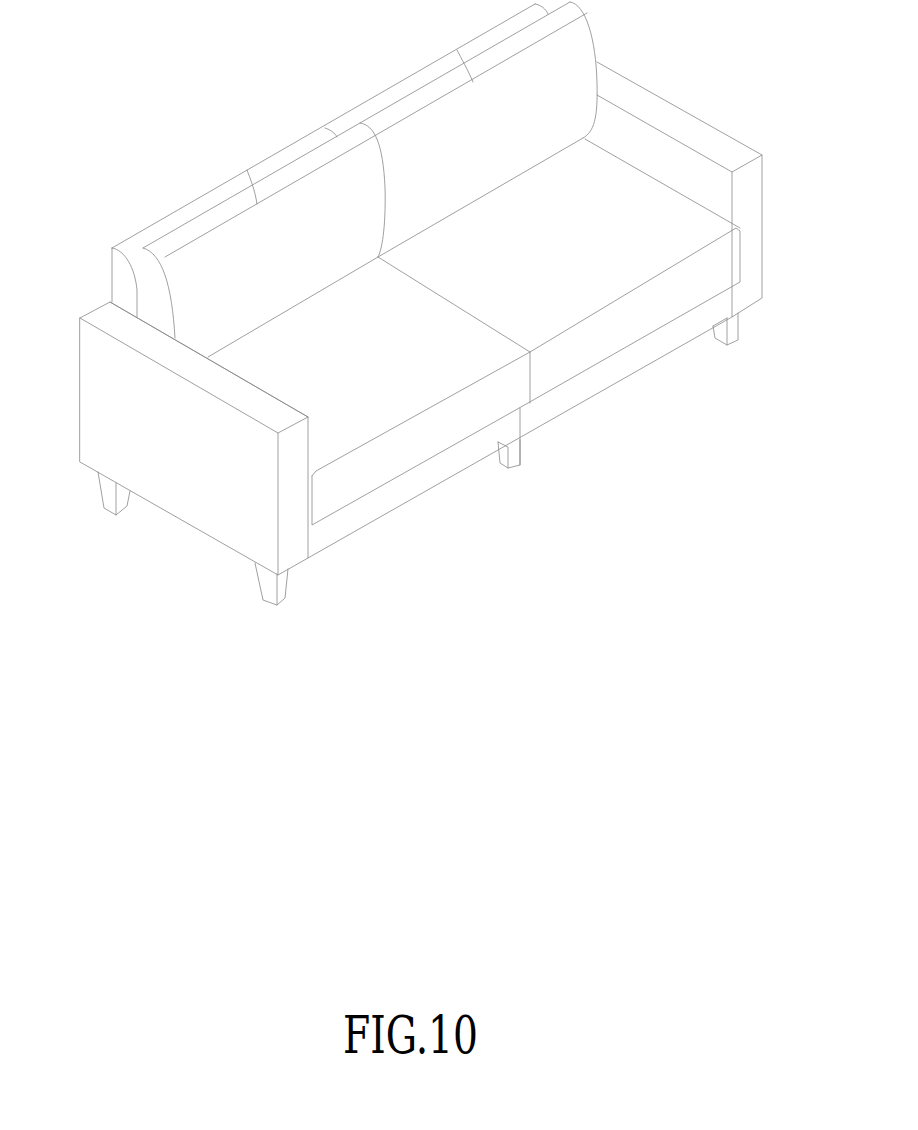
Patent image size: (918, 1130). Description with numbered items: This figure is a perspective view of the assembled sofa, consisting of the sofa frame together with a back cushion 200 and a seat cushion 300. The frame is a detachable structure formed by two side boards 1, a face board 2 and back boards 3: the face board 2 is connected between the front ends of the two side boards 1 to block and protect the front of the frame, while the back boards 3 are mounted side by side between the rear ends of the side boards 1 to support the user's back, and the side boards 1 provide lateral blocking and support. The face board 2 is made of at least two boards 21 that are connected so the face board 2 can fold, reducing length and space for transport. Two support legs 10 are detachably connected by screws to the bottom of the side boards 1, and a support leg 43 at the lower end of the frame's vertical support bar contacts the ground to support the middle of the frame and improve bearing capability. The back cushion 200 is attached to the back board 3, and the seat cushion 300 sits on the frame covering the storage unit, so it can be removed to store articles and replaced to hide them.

The side board 1 is at (193, 508).
The support leg 10 is at (107, 488).
The face board 2 is at (608, 465).
The board 21 is at (542, 418).
The support leg 43 is at (505, 463).
The back board 3 is at (177, 213).
The back cushion 200 is at (247, 170).
The seat cushion 300 is at (392, 458).